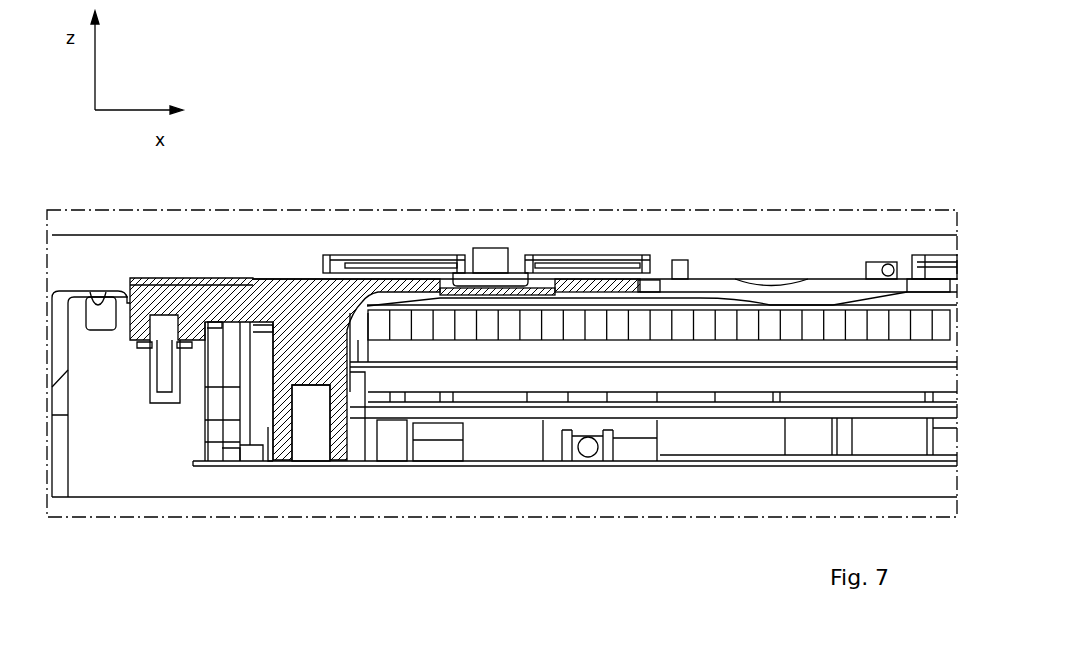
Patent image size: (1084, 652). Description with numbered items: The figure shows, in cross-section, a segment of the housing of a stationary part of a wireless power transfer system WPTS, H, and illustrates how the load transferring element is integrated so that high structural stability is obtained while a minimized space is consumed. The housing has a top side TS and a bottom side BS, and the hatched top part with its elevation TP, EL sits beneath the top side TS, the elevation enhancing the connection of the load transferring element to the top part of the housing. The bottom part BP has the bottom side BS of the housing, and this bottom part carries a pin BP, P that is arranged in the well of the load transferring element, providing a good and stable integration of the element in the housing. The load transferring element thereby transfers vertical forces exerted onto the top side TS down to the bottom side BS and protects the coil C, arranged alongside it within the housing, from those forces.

The wafer positioning table system / housing WPTS, H is at (625, 157).
The top side TS is at (832, 235).
The bottom side BS is at (723, 497).
The table plate / electrically conductive layer TP, EL is at (277, 290).
The coil C is at (527, 327).
The bottom part BP is at (566, 480).
The base plate pillar BP, P is at (308, 445).